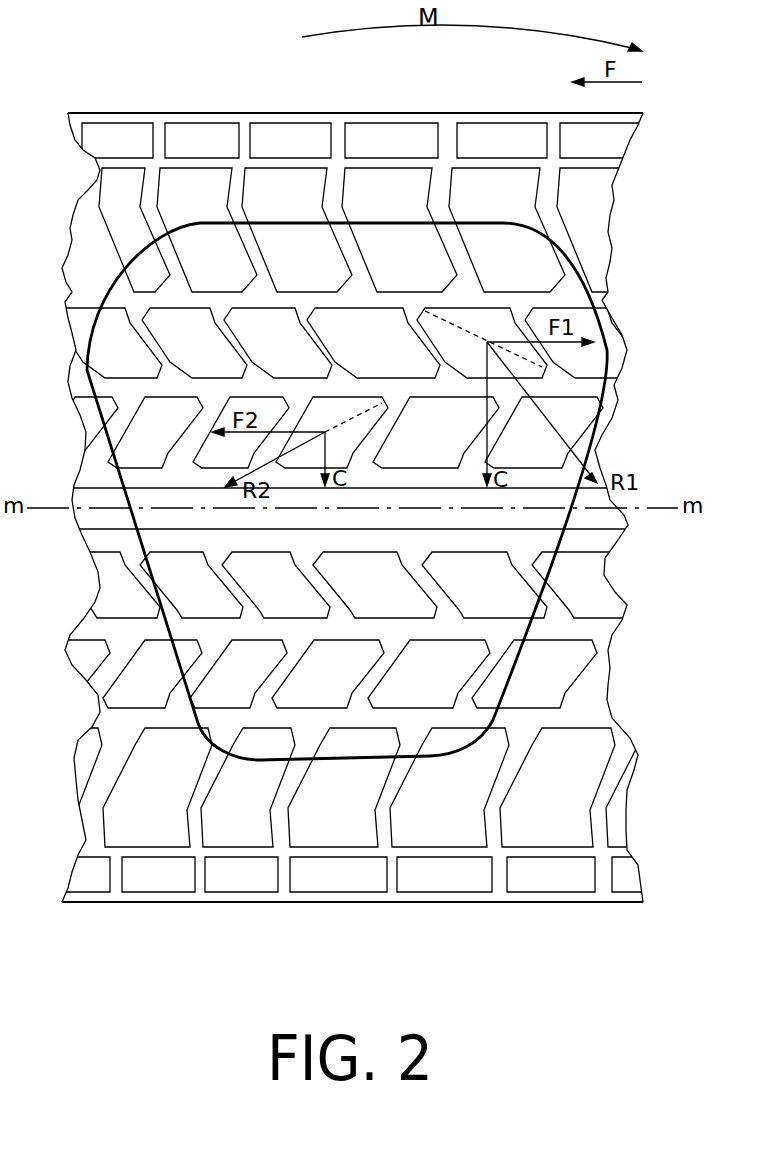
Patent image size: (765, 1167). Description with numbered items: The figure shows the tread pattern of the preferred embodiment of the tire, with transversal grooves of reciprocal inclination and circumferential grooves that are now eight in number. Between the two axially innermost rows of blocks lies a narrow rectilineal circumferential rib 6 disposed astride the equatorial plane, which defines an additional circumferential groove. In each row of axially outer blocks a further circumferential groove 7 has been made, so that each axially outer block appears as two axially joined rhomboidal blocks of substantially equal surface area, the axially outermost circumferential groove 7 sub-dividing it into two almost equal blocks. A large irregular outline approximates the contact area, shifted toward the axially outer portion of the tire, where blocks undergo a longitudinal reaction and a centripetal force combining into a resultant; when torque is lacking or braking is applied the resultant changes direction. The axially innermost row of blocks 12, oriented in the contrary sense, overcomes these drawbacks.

The axially outermost circumferential groove 7 is at (117, 163).
The axially innermost row of blocks 12 is at (105, 416).
The narrow rectilineal circumferential rib 6 is at (100, 498).